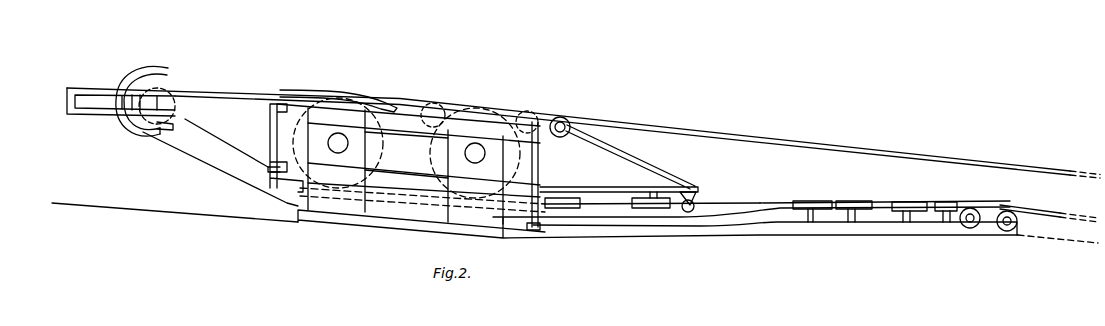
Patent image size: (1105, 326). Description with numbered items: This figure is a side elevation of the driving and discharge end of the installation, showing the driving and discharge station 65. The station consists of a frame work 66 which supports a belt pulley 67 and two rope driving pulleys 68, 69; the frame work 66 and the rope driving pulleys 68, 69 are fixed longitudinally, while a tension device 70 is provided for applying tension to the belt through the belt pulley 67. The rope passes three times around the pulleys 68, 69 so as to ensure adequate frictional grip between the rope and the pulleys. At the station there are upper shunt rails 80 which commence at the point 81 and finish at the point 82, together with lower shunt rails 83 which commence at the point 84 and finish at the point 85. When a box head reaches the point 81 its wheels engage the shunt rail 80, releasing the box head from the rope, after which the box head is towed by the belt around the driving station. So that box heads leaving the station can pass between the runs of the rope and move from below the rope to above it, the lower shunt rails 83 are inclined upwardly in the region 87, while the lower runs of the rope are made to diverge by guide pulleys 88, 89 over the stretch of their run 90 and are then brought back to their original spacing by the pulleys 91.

The driving and discharge station 65 is at (410, 137).
The frame work 66 is at (355, 213).
The belt pulley 67 is at (152, 107).
The rope driving pulley 68 is at (373, 149).
The rope driving pulley 69 is at (523, 170).
The tension device 70 is at (78, 117).
The upper shunt rail 80 is at (249, 89).
The commencing point of upper shunt rails 81 is at (400, 106).
The finishing point of upper shunt rails 82 is at (162, 122).
The lower shunt rail 83 is at (193, 160).
The commencing point of lower shunt rails 84 is at (170, 72).
The finishing point of lower shunt rails 85 is at (1027, 210).
The inclined region of lower shunt rails 87 is at (755, 213).
The guide pulley 88 is at (653, 210).
The guide pulley 89 is at (852, 202).
The stretch of rope run 90 is at (738, 203).
The reconverging pulleys 91 is at (938, 203).